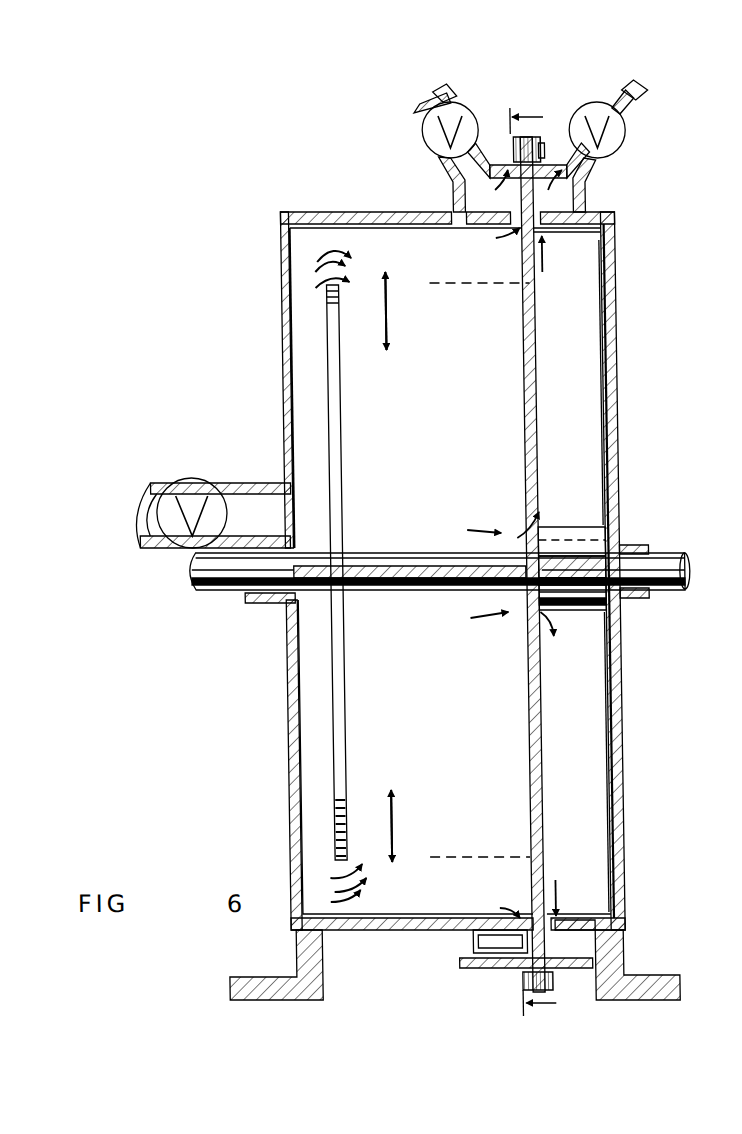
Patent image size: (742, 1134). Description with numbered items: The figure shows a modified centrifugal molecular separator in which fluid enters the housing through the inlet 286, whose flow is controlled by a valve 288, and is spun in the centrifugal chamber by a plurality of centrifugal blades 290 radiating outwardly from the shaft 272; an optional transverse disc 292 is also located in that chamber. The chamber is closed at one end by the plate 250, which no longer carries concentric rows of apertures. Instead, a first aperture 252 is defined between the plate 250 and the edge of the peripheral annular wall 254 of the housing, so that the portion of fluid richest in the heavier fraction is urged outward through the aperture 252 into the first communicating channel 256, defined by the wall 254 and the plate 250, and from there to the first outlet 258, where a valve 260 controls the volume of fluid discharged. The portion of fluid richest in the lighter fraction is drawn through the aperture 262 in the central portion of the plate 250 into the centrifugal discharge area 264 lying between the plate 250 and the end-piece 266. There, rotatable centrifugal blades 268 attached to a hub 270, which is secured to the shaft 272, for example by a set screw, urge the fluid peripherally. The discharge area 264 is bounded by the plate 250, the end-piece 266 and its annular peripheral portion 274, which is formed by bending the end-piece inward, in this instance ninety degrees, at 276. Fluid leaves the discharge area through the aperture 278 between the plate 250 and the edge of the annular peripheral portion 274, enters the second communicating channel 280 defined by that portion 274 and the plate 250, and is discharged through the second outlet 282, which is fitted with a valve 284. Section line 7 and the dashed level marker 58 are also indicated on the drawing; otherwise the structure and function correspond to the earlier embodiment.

The section line 7- 7 is at (543, 563).
The liquid level 58 is at (478, 289).
The plate 250 is at (538, 803).
The first aperture 252 is at (476, 968).
The peripheral annular wall 254 is at (401, 218).
The first communicating channel 256 is at (484, 198).
The first outlet 258 is at (425, 110).
The valve 260 is at (432, 142).
The aperture 262 is at (533, 612).
The centrifugal discharge area 264 is at (586, 430).
The end-piece 266 is at (606, 472).
The rotatable centrifugal blades 268 is at (584, 396).
The hub 270 is at (584, 548).
The shaft 272 is at (684, 574).
The annular peripheral portion 274 is at (585, 224).
The inward angulation 276 is at (628, 210).
The aperture 278 is at (548, 230).
The second communicating channel 280 is at (580, 194).
The second outlet 282 is at (621, 107).
The valve 284 is at (618, 140).
The inlet 286 is at (162, 483).
The valve 288 is at (200, 480).
The centrifugal blades 290 is at (438, 570).
The transverse disc 292 is at (327, 672).